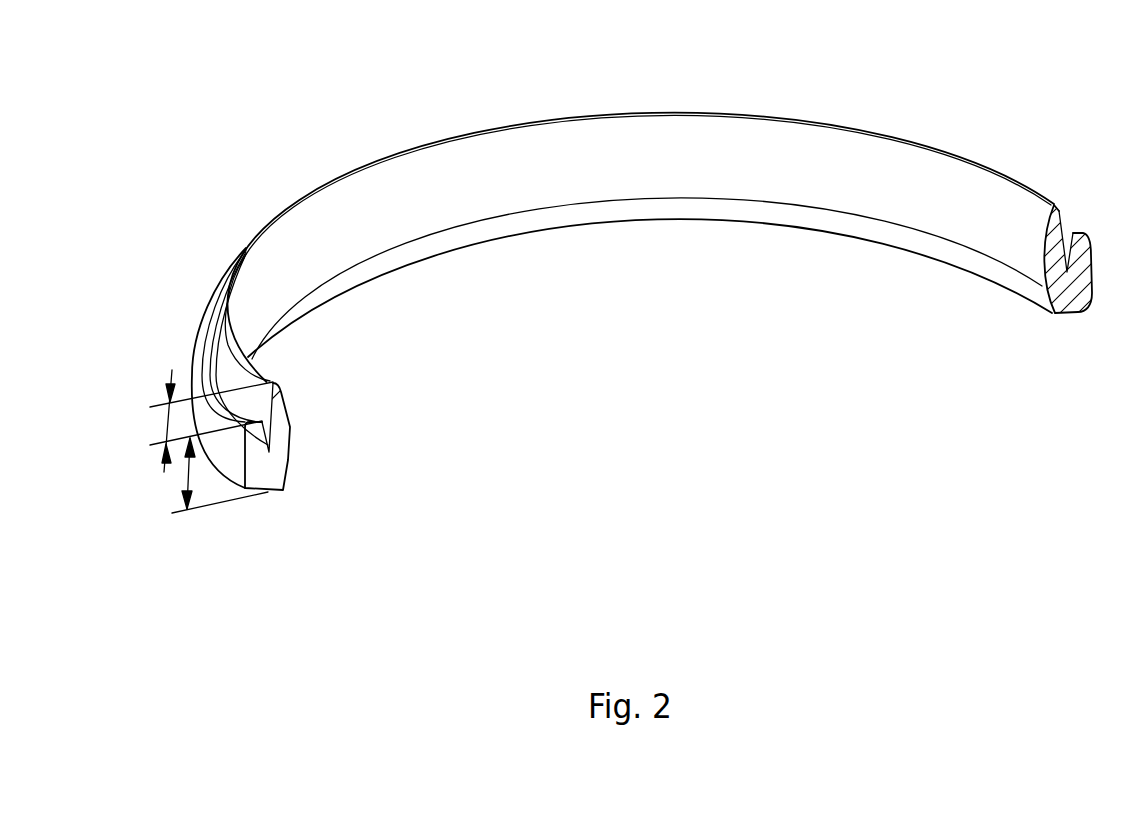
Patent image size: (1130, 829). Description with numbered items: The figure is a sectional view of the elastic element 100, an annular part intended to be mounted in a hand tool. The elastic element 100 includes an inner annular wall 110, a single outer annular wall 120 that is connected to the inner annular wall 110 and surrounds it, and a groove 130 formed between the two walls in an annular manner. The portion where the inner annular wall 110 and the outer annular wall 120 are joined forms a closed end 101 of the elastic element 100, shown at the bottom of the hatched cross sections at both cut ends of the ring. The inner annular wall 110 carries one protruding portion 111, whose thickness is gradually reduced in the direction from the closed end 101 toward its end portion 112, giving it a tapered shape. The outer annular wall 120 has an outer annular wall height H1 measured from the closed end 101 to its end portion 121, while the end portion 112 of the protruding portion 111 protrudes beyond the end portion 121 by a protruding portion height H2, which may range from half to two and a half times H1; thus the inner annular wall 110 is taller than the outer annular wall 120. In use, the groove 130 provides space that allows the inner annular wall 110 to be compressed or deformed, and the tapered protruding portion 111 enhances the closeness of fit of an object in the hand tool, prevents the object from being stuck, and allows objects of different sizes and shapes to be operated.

The elastic element 100 is at (82, 67).
The closed end 101 is at (267, 492).
The inner annular wall 110 is at (318, 222).
The protruding portion 111 is at (227, 353).
The end portion of the protruding portion 112 is at (376, 162).
The outer annular wall 120 is at (244, 458).
The end portion of the outer annular wall 121 is at (210, 305).
The groove 130 is at (268, 438).
The outer annular wall height H1 is at (186, 478).
The protruding portion height H2 is at (162, 432).